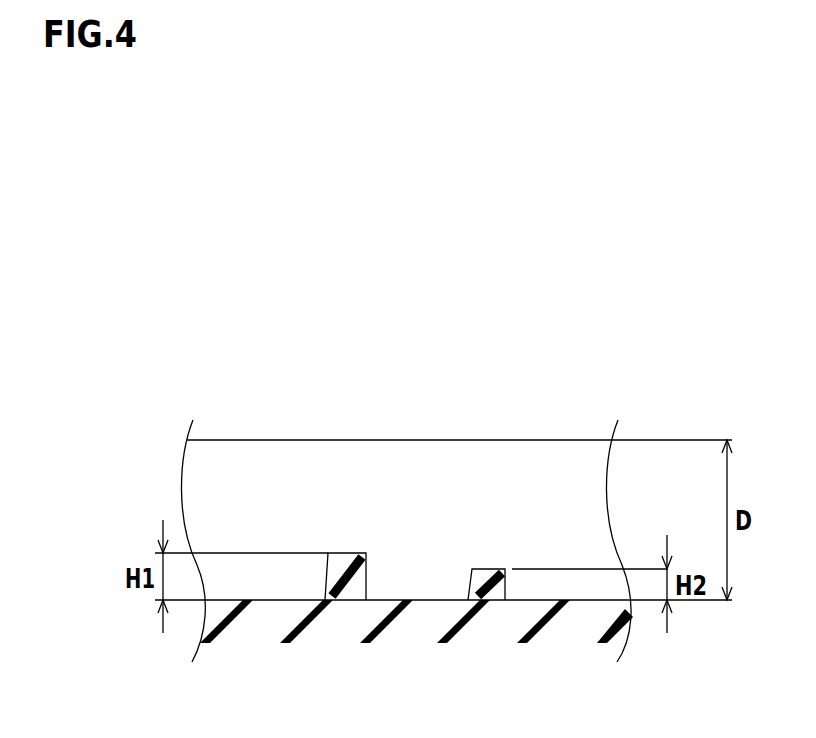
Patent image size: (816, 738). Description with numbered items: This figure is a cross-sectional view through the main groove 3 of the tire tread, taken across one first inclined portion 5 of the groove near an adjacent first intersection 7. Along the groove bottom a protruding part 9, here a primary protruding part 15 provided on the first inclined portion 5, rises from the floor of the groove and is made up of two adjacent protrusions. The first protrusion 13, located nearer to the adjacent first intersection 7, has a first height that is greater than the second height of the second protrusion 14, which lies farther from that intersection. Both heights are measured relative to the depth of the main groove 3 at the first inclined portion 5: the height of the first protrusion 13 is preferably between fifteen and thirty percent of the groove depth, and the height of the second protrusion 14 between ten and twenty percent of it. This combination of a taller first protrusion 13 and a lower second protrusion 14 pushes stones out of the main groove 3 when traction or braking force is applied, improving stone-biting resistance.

The first intersection 7 is at (222, 515).
The main groove 3 is at (443, 476).
The first inclined portion 5 is at (267, 515).
The protruding part 9 is at (414, 458).
The primary protruding part 15 is at (510, 375).
The first protrusion 13 is at (340, 553).
The second protrusion 14 is at (488, 569).